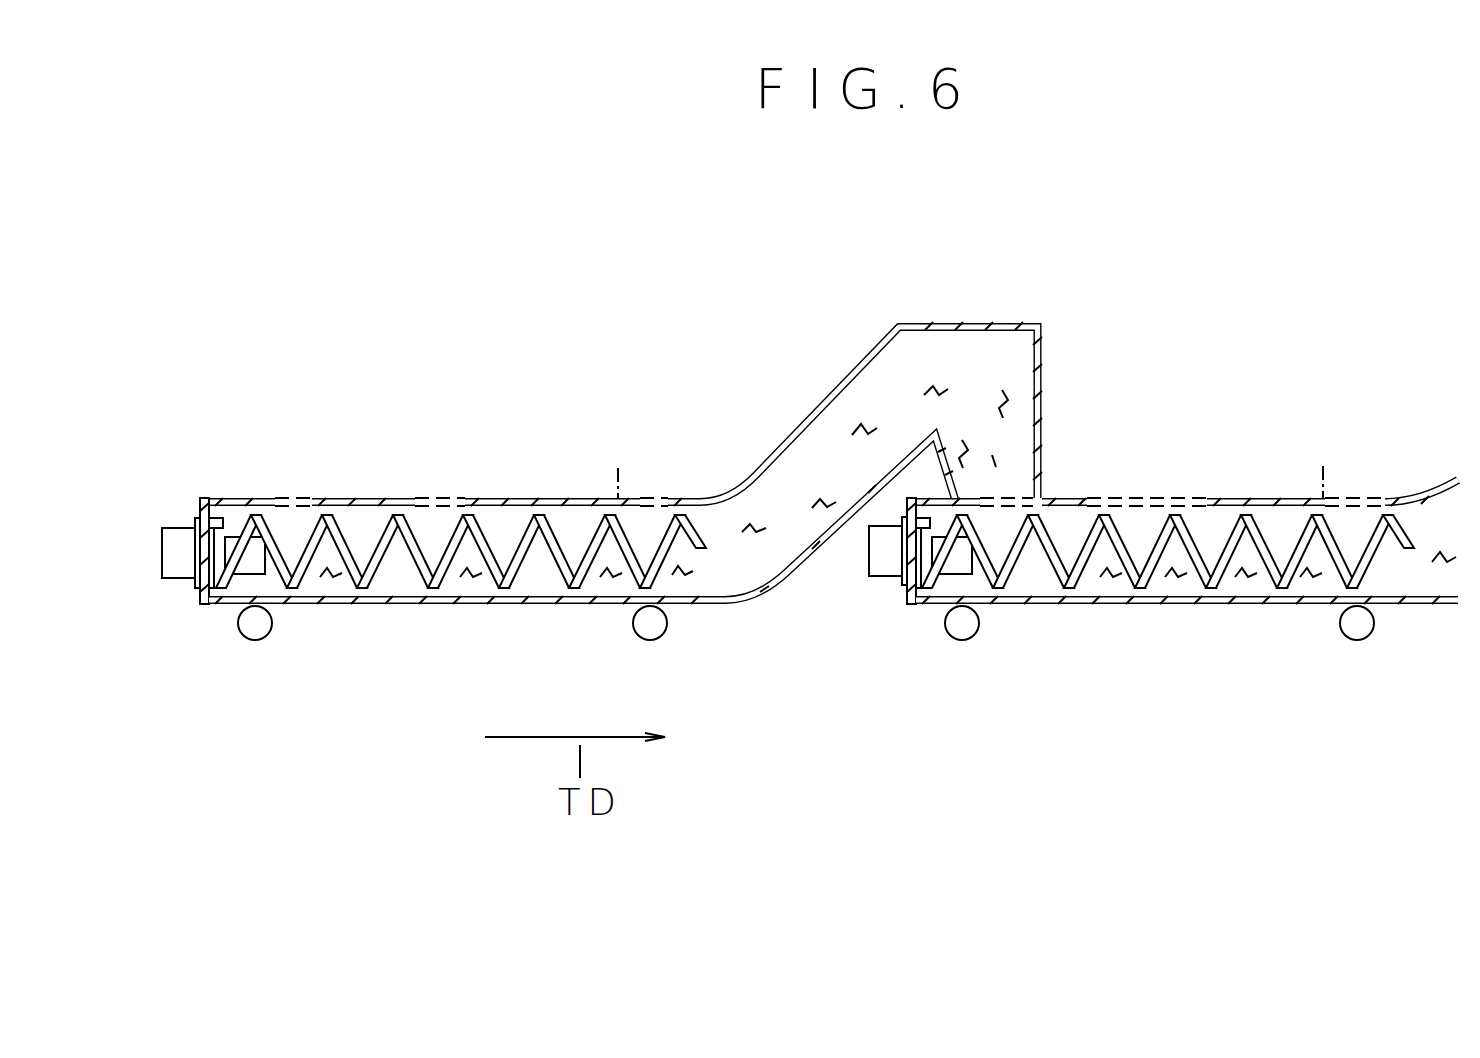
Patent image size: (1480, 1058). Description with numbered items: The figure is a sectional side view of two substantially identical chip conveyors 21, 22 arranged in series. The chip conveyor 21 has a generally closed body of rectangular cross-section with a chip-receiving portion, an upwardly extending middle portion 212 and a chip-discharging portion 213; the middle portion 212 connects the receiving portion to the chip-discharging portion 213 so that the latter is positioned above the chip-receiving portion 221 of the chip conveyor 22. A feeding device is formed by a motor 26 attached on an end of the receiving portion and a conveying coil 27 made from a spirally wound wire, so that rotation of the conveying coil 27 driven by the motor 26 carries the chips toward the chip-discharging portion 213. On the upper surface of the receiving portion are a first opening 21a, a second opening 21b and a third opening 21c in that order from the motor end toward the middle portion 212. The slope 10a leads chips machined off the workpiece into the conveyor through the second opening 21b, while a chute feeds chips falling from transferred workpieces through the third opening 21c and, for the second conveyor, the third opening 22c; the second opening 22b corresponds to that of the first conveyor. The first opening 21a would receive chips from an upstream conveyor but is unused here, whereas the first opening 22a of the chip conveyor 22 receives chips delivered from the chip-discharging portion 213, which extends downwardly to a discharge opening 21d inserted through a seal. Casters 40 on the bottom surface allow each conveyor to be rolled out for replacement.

The chip conveyor 21 is at (479, 347).
The chip conveyor 22 is at (1358, 223).
The first opening 21a is at (275, 473).
The second opening 21b is at (428, 470).
The third opening 21c is at (643, 470).
The discharge opening 21d is at (991, 458).
The first opening 22a is at (1011, 534).
The second opening 22b is at (1143, 468).
The third opening 22c is at (1351, 468).
The middle portion 212 is at (840, 380).
The chip-discharging portion 213 is at (1042, 323).
The chip-receiving portion 221 is at (491, 605).
The motor 26 is at (175, 565).
The conveying coil 27 is at (422, 572).
The casters 40 is at (255, 628).
The slope 10a is at (504, 498).